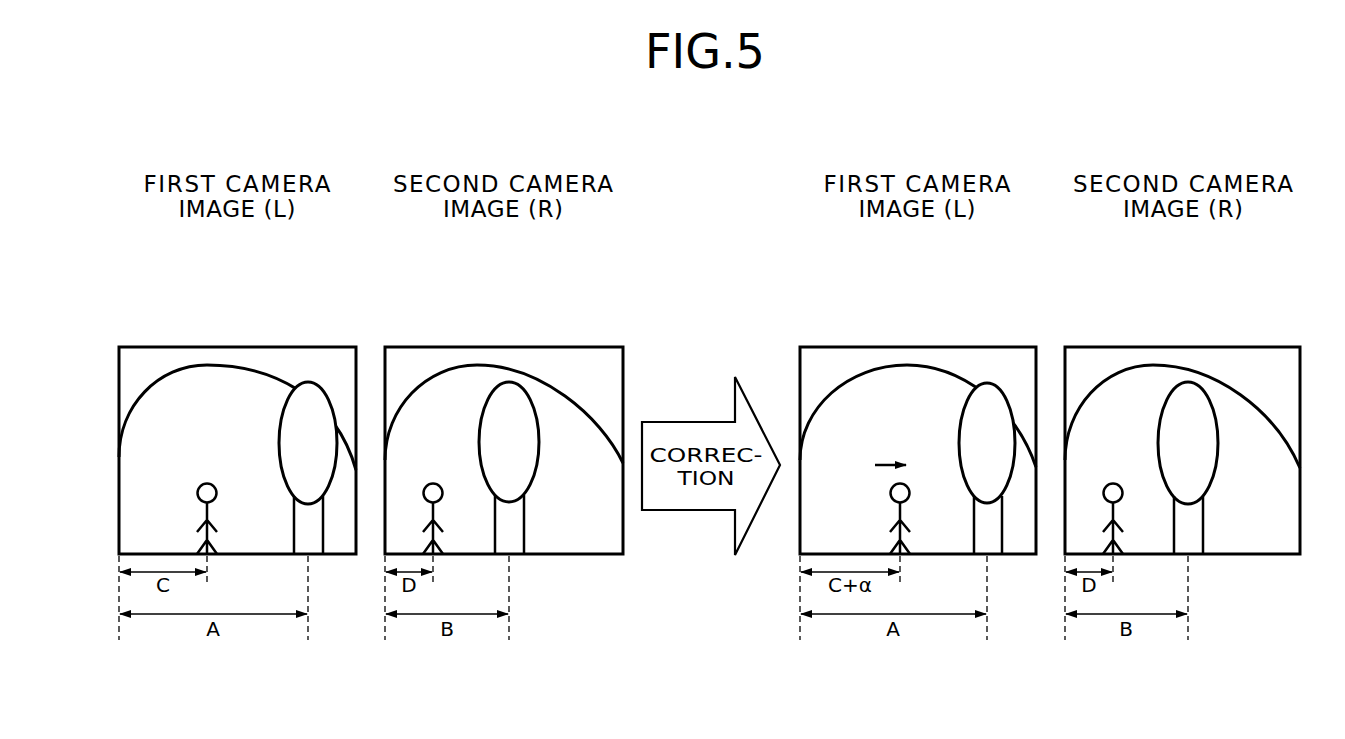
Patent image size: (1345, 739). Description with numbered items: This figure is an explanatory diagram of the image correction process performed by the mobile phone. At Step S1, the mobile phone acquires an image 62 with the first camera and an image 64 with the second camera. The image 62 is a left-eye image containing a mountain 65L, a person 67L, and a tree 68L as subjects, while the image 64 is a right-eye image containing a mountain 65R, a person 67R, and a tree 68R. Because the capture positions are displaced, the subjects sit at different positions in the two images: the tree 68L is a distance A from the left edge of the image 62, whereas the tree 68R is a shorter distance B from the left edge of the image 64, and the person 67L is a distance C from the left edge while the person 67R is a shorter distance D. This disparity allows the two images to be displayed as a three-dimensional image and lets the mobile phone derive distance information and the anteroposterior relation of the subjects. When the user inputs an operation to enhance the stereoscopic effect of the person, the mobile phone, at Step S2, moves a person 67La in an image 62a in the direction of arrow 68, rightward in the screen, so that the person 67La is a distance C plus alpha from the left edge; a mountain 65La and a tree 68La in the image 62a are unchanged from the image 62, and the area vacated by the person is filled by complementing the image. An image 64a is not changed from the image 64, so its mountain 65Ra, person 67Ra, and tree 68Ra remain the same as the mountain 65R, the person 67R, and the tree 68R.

The image 62 is at (245, 347).
The image 64 is at (582, 347).
The image 62a is at (907, 347).
The image 64a is at (1275, 347).
The mountain 65L is at (197, 382).
The mountain 65R is at (468, 382).
The mountain 65La is at (863, 382).
The mountain 65Ra is at (1232, 402).
The person 67L is at (207, 482).
The person 67R is at (434, 483).
The person 67La is at (893, 488).
The person 67Ra is at (1114, 483).
The tree 68L is at (313, 400).
The tree 68R is at (523, 400).
The tree 68La is at (988, 400).
The tree 68Ra is at (1179, 400).
The arrow 68 is at (896, 460).
The step S1 is at (578, 307).
The step S2 is at (1280, 307).